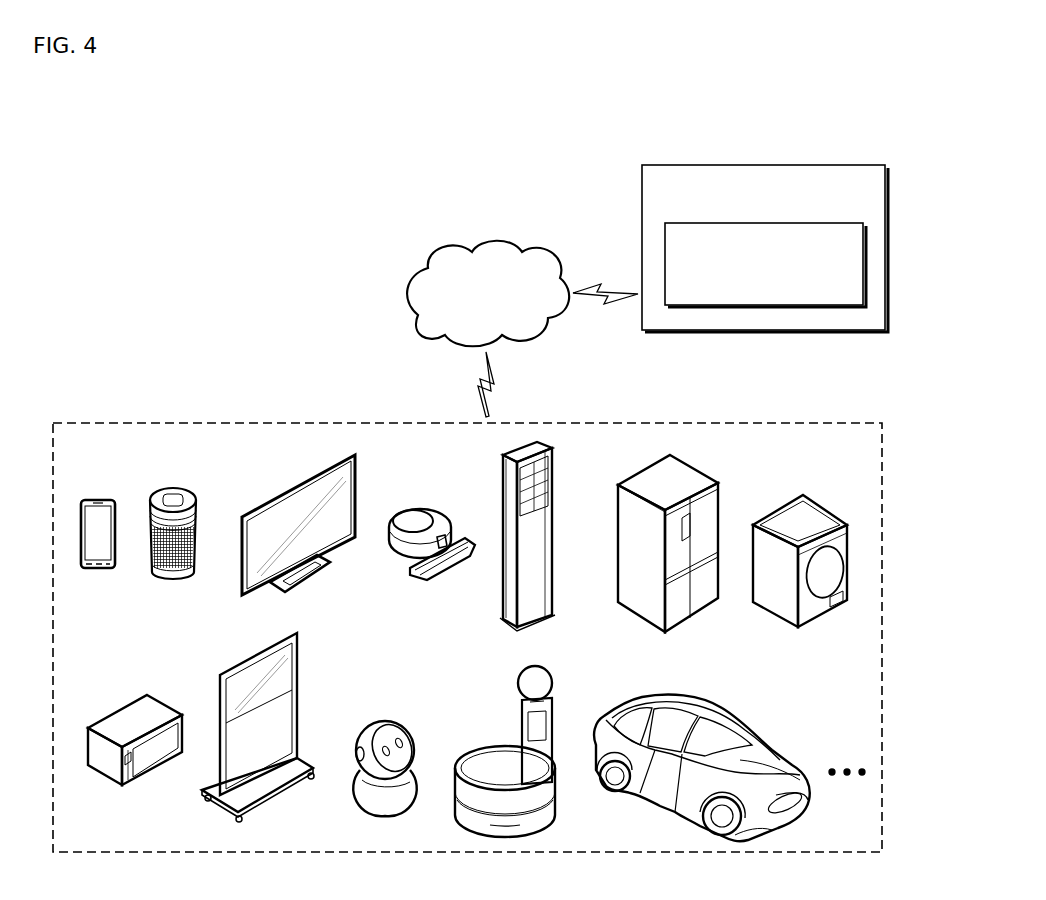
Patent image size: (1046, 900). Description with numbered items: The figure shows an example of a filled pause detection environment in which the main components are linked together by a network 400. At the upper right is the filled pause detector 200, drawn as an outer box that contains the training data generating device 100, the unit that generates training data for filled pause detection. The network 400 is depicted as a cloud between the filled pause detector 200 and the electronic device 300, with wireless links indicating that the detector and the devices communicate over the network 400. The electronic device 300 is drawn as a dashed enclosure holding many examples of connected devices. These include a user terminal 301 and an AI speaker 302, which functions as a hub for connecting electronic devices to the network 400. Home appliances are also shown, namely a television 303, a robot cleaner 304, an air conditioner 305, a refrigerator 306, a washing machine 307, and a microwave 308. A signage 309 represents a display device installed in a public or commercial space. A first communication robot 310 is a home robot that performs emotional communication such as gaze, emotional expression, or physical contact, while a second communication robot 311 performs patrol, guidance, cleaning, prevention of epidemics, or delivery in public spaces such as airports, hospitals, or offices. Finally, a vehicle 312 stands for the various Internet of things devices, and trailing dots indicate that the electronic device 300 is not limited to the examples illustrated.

The training data generating device 100 is at (825, 223).
The filled pause detector 200 is at (840, 165).
The electronic device 300 is at (823, 421).
The user terminal 301 is at (97, 500).
The AI speaker 302 is at (174, 490).
The television 303 is at (280, 496).
The robot cleaner 304 is at (428, 507).
The air conditioner 305 is at (540, 460).
The refrigerator 306 is at (690, 475).
The washing machine 307 is at (815, 510).
The microwave 308 is at (135, 706).
The signage 309 is at (297, 690).
The first communication robot 310 is at (407, 727).
The second communication robot 311 is at (553, 683).
The vehicle 312 is at (737, 735).
The network 400 is at (440, 248).